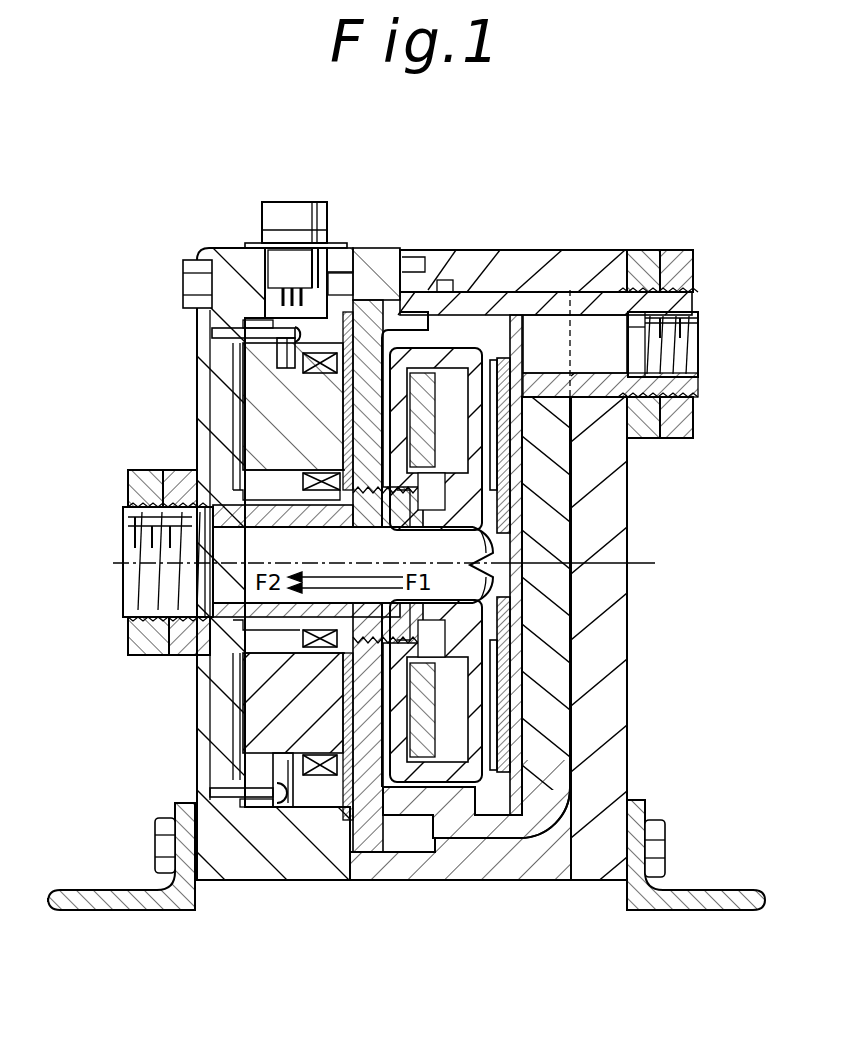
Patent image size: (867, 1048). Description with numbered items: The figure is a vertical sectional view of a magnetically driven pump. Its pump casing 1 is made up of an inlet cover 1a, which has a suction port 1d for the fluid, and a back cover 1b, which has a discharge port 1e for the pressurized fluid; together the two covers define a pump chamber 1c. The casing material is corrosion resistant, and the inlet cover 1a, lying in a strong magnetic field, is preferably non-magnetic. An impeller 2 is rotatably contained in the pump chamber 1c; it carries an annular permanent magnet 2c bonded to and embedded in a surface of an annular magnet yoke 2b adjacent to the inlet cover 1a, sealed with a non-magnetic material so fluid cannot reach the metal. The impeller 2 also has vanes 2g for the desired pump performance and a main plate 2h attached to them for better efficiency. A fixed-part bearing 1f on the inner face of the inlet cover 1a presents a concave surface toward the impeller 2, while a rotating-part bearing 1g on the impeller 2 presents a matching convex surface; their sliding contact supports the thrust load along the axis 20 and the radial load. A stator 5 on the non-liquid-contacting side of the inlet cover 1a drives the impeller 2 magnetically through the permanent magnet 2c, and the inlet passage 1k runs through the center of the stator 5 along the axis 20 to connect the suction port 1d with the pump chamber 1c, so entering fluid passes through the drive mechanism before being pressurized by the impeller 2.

The pump casing 1 is at (486, 282).
The inlet cover 1a is at (377, 320).
The back cover 1b is at (525, 293).
The pump chamber 1c is at (503, 333).
The suction port 1d is at (122, 550).
The discharge port 1e is at (697, 361).
The fixed-part bearing 1f is at (364, 527).
The rotating-part bearing 1g is at (420, 530).
The inlet passage 1k is at (292, 561).
The impeller 2 is at (447, 775).
The magnet yoke 2b is at (450, 687).
The permanent magnet 2c is at (437, 737).
The vanes 2g is at (495, 654).
The main plate 2h is at (513, 487).
The stator 5 is at (253, 807).
The axis 20 is at (635, 558).